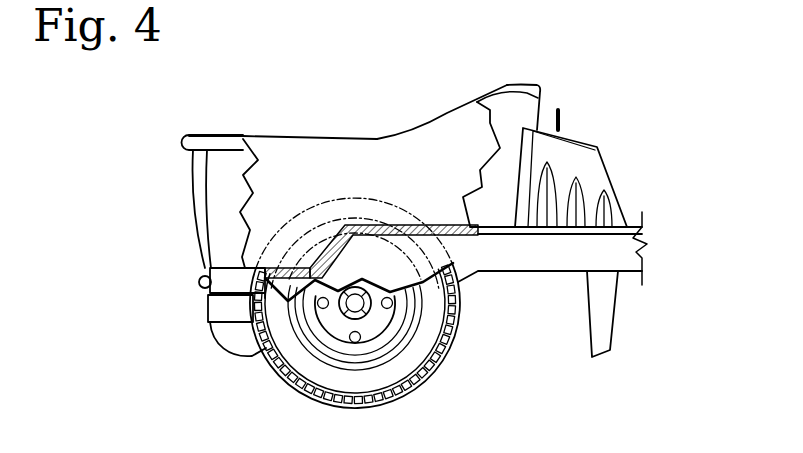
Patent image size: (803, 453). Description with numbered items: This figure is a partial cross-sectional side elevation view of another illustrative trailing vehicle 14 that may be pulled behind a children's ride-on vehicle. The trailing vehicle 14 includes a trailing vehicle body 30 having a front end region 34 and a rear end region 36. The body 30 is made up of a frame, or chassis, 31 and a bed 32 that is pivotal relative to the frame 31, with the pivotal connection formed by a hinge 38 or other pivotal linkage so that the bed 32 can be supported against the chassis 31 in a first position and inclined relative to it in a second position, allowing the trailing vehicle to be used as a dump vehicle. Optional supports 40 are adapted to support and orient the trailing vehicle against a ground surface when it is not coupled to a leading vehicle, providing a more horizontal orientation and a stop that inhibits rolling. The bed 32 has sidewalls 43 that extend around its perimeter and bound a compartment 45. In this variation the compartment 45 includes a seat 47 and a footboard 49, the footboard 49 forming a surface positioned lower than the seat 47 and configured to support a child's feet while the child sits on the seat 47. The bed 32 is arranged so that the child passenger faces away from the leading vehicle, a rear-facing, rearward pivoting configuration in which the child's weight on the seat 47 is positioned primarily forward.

The trailing vehicle 14 is at (444, 80).
The trailing vehicle body 30 is at (172, 143).
The frame 31 is at (542, 280).
The bed 32 is at (443, 112).
The front end region 34 is at (618, 166).
The rear end region 36 is at (140, 203).
The hinge 38 is at (204, 290).
The supports 40 is at (246, 363).
The sidewalls 43 is at (477, 151).
The compartment 45 is at (323, 165).
The seat 47 is at (449, 223).
The footboard 49 is at (289, 268).